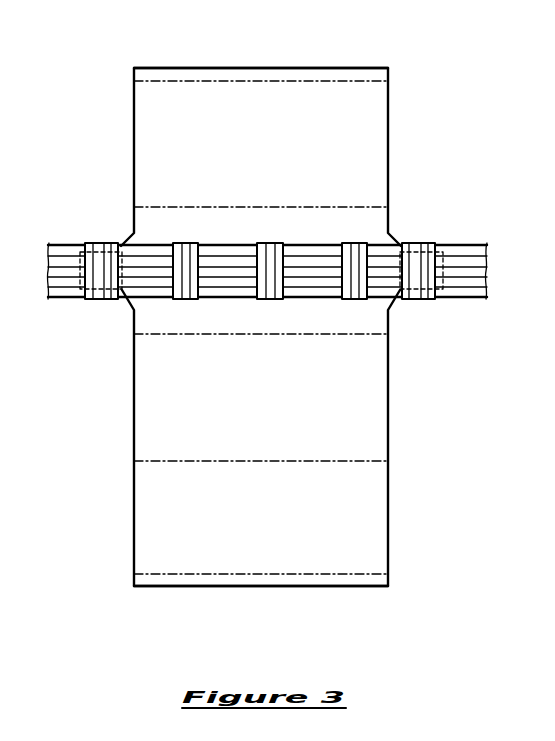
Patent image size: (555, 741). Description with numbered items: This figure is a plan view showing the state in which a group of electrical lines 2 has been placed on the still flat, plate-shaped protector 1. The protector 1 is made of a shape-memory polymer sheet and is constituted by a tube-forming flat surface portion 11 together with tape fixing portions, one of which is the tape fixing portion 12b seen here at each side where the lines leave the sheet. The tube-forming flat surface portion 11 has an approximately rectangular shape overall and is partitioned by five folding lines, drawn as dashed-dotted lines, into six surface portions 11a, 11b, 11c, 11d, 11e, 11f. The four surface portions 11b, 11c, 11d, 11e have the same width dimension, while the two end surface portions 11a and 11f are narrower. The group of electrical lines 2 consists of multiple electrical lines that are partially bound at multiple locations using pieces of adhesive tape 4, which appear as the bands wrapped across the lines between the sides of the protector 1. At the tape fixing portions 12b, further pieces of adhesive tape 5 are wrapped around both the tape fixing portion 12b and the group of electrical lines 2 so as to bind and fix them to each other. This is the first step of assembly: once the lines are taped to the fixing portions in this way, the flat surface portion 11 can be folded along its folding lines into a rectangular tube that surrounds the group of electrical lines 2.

The protector 1 is at (396, 44).
The group of electrical lines 2 is at (470, 290).
The pieces of adhesive tape 4 is at (187, 244).
The pieces of adhesive tape 5 is at (107, 244).
The tube-forming flat surface portion 11 is at (389, 97).
The surface portion 11a is at (138, 73).
The surface portion 11b is at (139, 131).
The surface portion 11c is at (143, 316).
The surface portion 11d is at (142, 440).
The surface portion 11e is at (142, 517).
The surface portion 11f is at (135, 580).
The tape fixing portion 12b is at (79, 251).